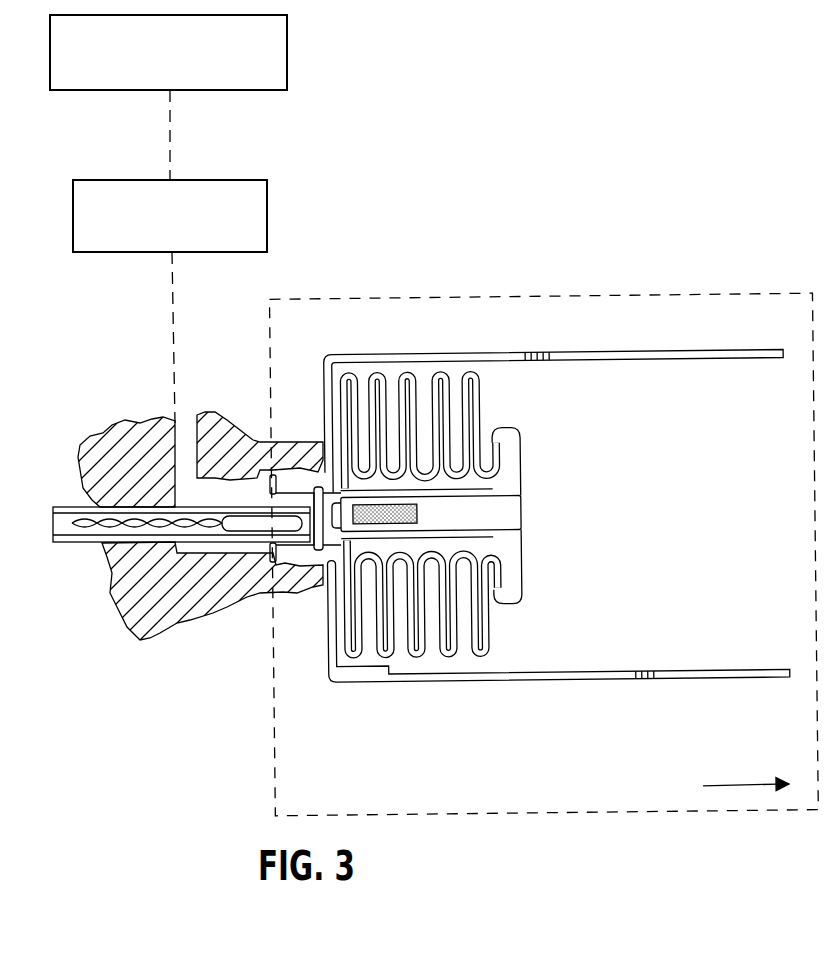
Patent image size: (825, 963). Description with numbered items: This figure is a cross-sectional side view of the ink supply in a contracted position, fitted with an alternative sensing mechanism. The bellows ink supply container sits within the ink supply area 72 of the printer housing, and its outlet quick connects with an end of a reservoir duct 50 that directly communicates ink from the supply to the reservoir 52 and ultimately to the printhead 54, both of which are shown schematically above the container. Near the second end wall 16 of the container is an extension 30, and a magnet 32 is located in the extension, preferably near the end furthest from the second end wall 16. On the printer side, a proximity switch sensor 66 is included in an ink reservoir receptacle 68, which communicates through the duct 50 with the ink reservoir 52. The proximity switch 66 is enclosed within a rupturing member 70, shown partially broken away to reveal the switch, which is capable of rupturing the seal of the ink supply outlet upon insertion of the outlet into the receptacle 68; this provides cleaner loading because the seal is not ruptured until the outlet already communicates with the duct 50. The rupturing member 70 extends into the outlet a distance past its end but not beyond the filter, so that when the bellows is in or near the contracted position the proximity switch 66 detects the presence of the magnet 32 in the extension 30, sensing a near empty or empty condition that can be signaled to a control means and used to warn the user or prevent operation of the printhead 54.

The second end wall 16 is at (523, 450).
The extension 30 is at (338, 538).
The magnet 32 is at (419, 516).
The reservoir duct 50 is at (197, 612).
The reservoir 52 is at (184, 246).
The printhead 54 is at (181, 83).
The proximity switch sensor 66 is at (250, 521).
The ink reservoir receptacle 68 is at (297, 475).
The rupturing member 70 is at (160, 507).
The ink supply area 72 is at (720, 328).